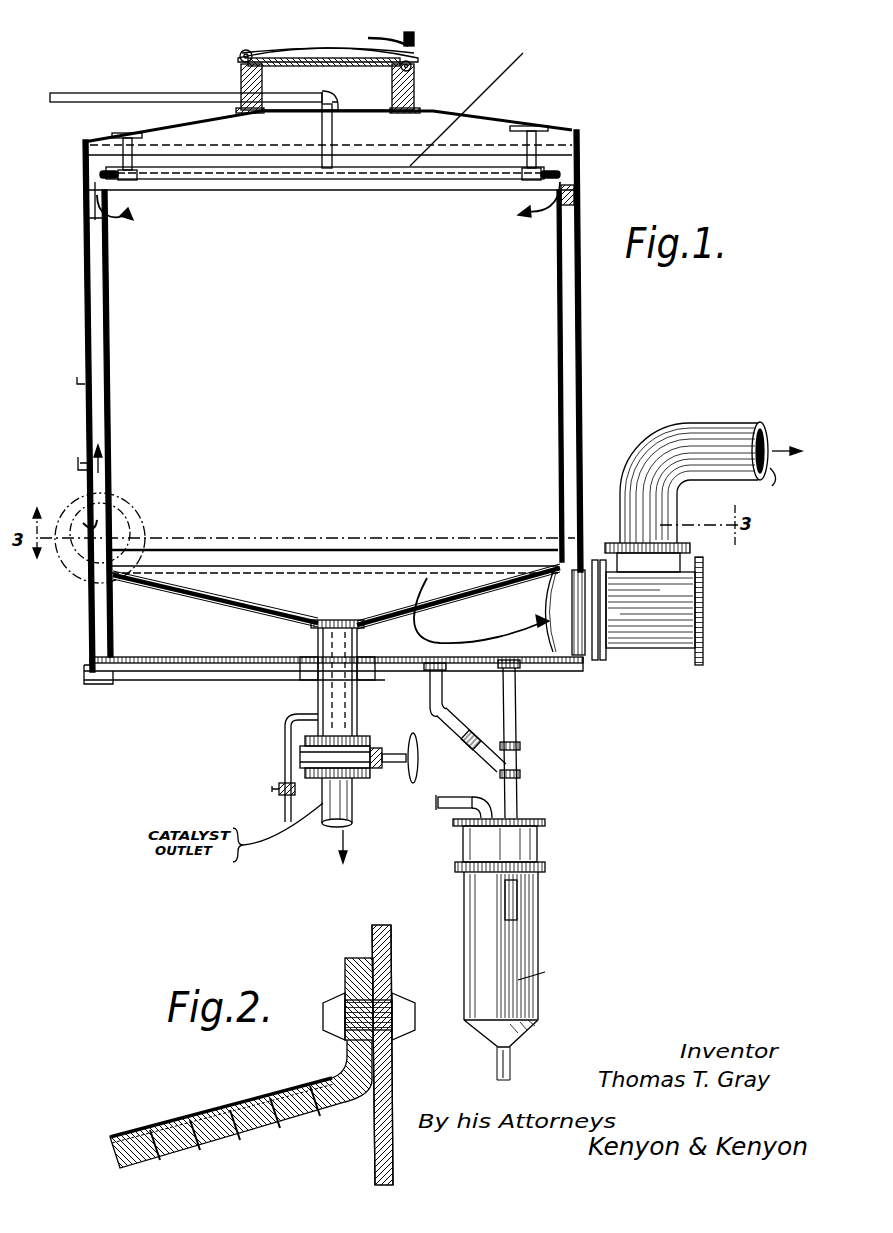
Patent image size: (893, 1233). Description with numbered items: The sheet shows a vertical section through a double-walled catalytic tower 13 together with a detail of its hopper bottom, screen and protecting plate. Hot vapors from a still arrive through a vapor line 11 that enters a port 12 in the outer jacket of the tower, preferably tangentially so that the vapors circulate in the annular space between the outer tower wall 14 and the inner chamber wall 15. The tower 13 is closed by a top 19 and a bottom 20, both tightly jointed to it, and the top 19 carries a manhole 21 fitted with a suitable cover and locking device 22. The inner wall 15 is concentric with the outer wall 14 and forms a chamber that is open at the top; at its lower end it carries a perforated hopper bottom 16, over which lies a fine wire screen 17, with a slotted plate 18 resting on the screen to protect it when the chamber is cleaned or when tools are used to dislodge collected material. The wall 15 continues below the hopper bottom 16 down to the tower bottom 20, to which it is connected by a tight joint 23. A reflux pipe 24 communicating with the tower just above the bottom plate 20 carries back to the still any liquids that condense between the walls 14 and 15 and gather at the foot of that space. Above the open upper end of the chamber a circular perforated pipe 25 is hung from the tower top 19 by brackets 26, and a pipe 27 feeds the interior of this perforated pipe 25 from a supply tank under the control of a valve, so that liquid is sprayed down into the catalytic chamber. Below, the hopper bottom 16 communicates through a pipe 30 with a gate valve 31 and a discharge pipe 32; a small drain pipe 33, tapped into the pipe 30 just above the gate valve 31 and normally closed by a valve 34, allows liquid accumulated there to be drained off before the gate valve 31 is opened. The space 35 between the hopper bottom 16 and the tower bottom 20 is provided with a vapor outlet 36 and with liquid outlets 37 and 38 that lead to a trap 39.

In FIG. 1, the vapor line 11 is at (73, 573).
In FIG. 1, the port 12 is at (85, 522).
In FIG. 1, the catalytic tower 13 is at (575, 192).
In FIG. 1, the outer tower wall 14 is at (580, 320).
In FIG. 1, the inner chamber wall 15 is at (563, 400).
In FIG. 2, the inner chamber wall 15 is at (377, 942).
In FIG. 1, the perforated hopper bottom 16 is at (452, 599).
In FIG. 2, the perforated hopper bottom 16 is at (225, 1143).
In FIG. 1, the fine wire screen 17 is at (437, 603).
In FIG. 2, the fine wire screen 17 is at (213, 1110).
In FIG. 1, the slotted plate 18 is at (398, 613).
In FIG. 2, the slotted plate 18 is at (151, 1125).
In FIG. 1, the tower top 19 is at (470, 117).
In FIG. 1, the tower bottom 20 is at (195, 671).
In FIG. 1, the manhole 21 is at (407, 105).
In FIG. 1, the cover and locking device 22 is at (297, 52).
In FIG. 1, the tight joint 23 is at (112, 676).
In FIG. 1, the reflux pipe 24 is at (312, 675).
In FIG. 1, the circular perforated pipe 25 is at (393, 173).
In FIG. 1, the brackets 26 is at (127, 153).
In FIG. 1, the pipe 27 is at (134, 94).
In FIG. 1, the pipe 30 is at (357, 690).
In FIG. 1, the gate valve 31 is at (385, 770).
In FIG. 1, the discharge pipe 32 is at (330, 803).
In FIG. 1, the drain pipe 33 is at (283, 752).
In FIG. 1, the valve 34 is at (278, 793).
In FIG. 1, the space 35 is at (334, 594).
In FIG. 1, the vapor outlet 36 is at (705, 438).
In FIG. 1, the liquid outlet 37 is at (465, 733).
In FIG. 1, the liquid outlet 38 is at (517, 710).
In FIG. 1, the trap 39 is at (522, 937).